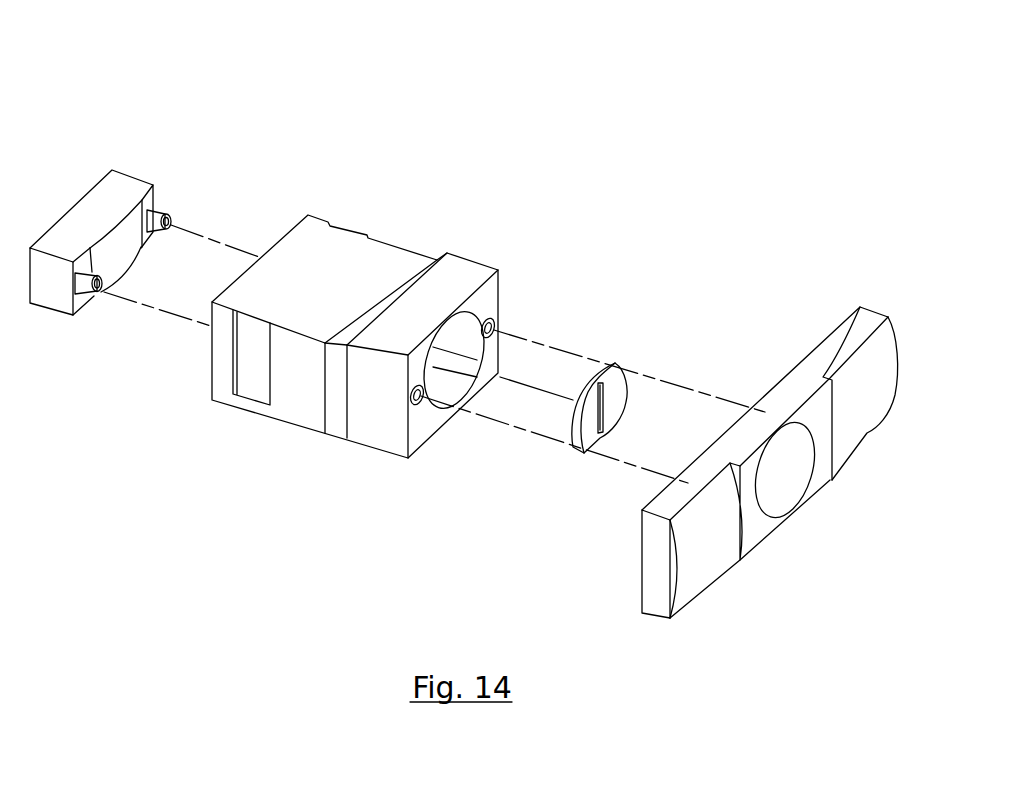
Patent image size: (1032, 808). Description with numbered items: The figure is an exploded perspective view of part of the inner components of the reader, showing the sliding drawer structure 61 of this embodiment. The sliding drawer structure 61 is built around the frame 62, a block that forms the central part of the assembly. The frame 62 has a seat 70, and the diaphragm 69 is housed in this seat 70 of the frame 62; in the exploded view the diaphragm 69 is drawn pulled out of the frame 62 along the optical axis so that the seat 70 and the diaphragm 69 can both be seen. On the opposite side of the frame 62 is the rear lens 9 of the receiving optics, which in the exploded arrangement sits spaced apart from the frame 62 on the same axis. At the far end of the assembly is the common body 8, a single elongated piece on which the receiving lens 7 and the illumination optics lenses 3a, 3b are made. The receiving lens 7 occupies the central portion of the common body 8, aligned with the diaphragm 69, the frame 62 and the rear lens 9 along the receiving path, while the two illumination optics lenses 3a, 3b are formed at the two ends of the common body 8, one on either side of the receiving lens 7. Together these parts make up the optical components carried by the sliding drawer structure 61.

The sliding drawer structure 61 is at (608, 115).
The rear lens 9 is at (123, 183).
The frame 62 is at (300, 417).
The seat 70 is at (497, 307).
The diaphragm 69 is at (625, 360).
The common body 8 is at (880, 314).
The illumination optics lens 3a is at (865, 413).
The illumination optics lens 3b is at (695, 573).
The receiving lens 7 is at (782, 492).